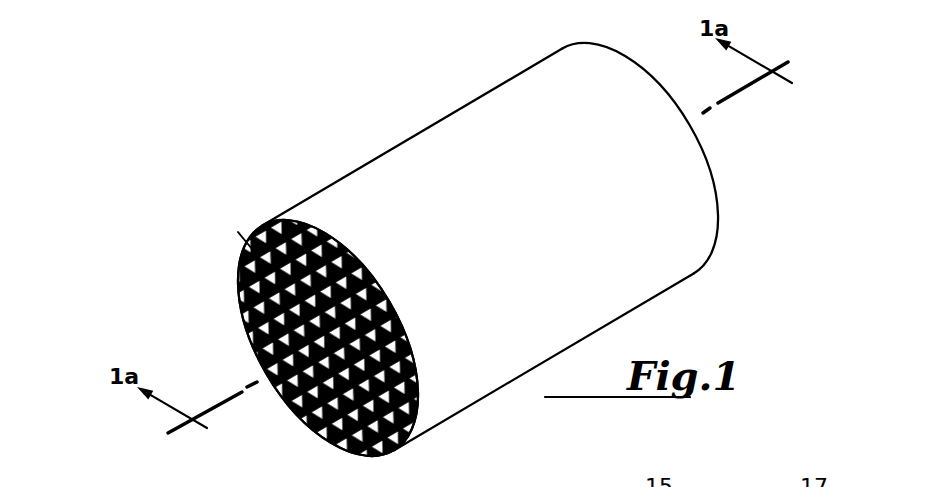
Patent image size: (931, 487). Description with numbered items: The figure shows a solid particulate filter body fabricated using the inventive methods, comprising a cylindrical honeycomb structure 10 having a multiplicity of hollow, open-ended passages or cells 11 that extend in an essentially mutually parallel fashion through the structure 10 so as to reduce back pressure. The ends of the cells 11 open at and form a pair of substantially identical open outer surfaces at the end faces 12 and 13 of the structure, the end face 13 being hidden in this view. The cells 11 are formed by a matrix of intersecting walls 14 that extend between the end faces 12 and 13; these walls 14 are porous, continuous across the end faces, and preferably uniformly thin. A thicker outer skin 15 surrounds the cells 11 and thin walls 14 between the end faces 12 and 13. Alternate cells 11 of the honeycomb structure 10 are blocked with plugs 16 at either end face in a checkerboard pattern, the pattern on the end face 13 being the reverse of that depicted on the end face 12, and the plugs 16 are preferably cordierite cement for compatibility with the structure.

The honeycomb structure 10 is at (402, 140).
The cells 11 is at (253, 250).
The end face 12 is at (242, 287).
The end face 13 is at (705, 158).
The walls 14 is at (417, 370).
The outer skin 15 is at (653, 252).
The plugs 16 is at (333, 230).